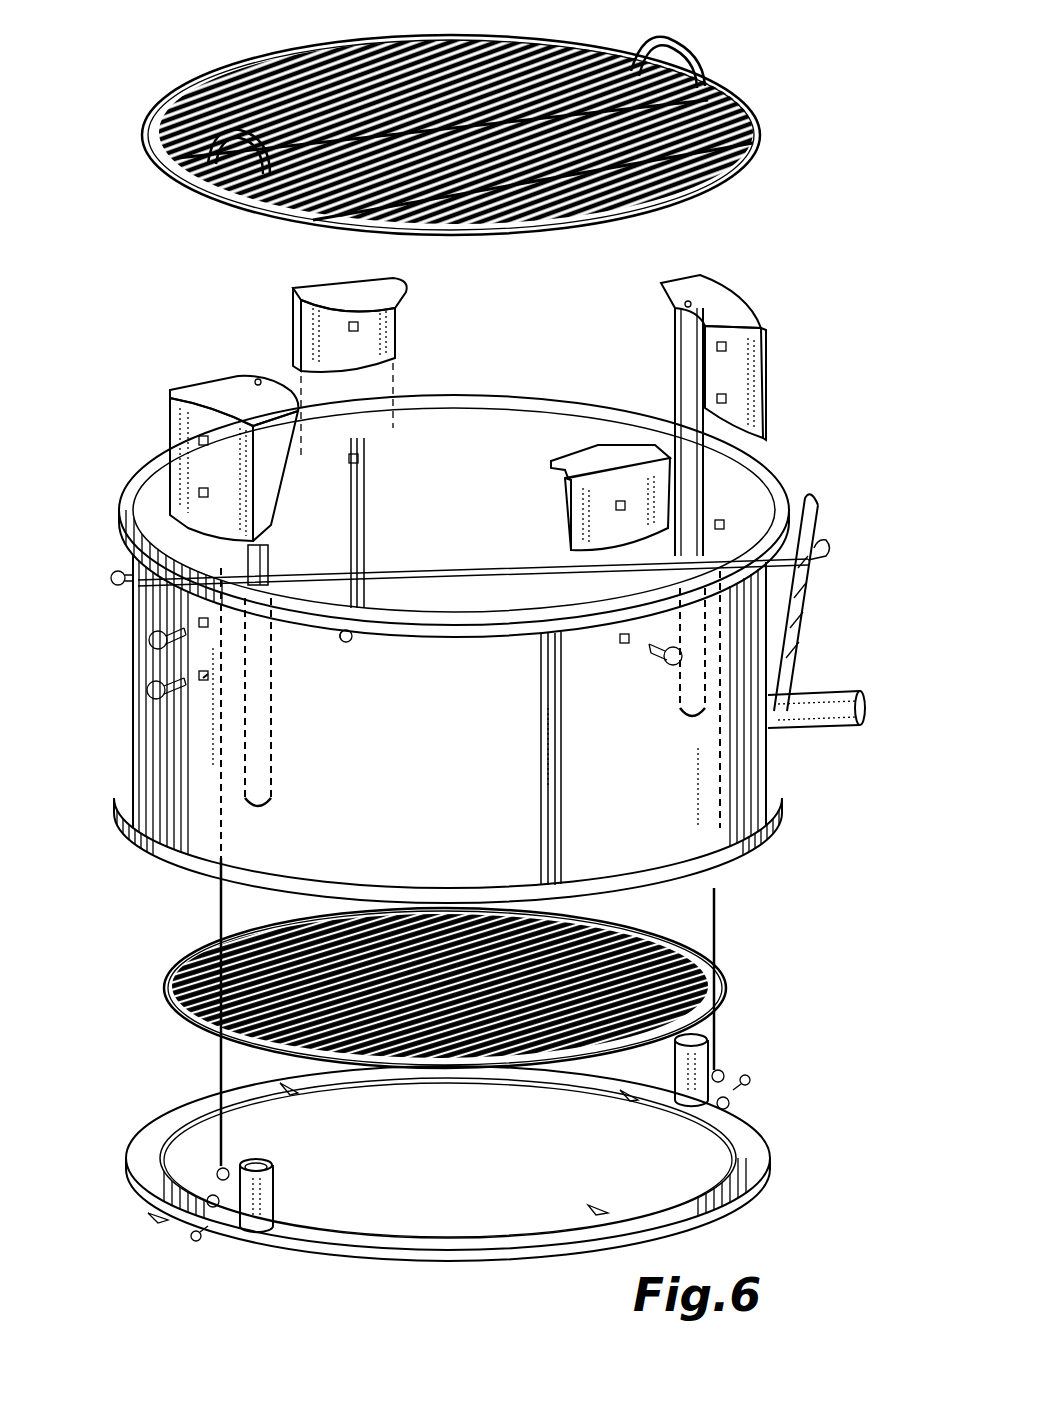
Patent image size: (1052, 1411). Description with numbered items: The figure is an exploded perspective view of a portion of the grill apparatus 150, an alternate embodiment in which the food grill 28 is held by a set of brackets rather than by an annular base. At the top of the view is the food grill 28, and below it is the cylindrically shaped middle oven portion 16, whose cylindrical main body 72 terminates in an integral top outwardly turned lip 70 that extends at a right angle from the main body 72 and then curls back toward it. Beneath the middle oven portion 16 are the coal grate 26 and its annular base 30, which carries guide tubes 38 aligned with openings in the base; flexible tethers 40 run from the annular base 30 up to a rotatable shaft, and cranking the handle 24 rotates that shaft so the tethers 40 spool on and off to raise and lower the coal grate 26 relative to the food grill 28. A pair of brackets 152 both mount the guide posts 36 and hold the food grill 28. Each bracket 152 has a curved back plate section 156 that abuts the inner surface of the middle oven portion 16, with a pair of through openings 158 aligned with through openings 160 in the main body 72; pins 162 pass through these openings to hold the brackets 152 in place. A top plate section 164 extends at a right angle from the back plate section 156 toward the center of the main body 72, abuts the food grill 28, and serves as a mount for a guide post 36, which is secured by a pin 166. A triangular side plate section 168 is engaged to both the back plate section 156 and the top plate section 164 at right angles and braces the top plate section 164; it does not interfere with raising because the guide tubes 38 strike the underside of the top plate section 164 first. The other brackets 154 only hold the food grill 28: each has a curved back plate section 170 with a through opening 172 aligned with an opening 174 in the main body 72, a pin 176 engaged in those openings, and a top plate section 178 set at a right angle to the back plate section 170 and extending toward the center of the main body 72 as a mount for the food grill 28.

The middle oven portion 16 is at (125, 677).
The handle 24 is at (822, 688).
The coal grate 26 is at (160, 968).
The food grill 28 is at (700, 178).
The annular base for the coal grate 30 is at (748, 1185).
The guide posts 36 is at (145, 525).
The guide tubes 38 is at (300, 1195).
The flexible tethers 40 is at (722, 897).
The lip 70 is at (575, 393).
The main body 72 is at (680, 780).
The grill apparatus 150 is at (430, 410).
The brackets 152 is at (430, 410).
The bracket 154 is at (445, 393).
The curved back plate section 156 is at (148, 462).
The through openings 158 is at (175, 470).
The through openings 160 is at (195, 675).
The pins 162 is at (140, 632).
The top plate section 164 is at (192, 386).
The pin 166 is at (688, 300).
The side plate section 168 is at (345, 462).
The curved back plate section 170 is at (285, 318).
The through opening 172 is at (352, 320).
The opening 174 is at (622, 627).
The pin 176 is at (645, 645).
The top plate section 178 is at (328, 285).